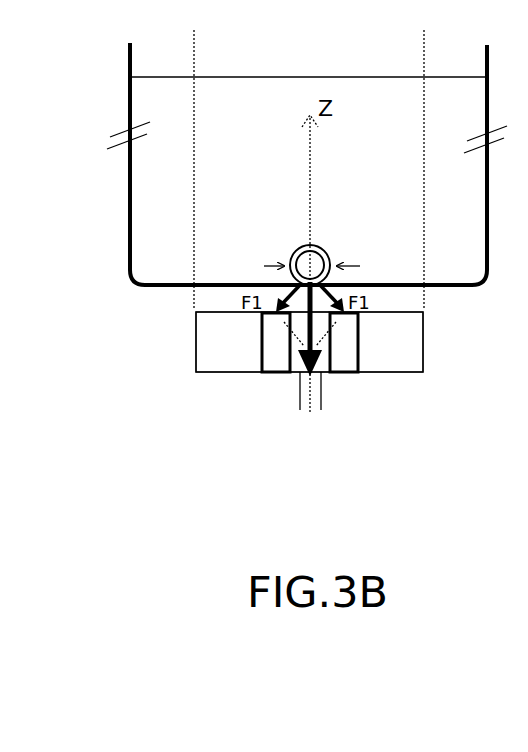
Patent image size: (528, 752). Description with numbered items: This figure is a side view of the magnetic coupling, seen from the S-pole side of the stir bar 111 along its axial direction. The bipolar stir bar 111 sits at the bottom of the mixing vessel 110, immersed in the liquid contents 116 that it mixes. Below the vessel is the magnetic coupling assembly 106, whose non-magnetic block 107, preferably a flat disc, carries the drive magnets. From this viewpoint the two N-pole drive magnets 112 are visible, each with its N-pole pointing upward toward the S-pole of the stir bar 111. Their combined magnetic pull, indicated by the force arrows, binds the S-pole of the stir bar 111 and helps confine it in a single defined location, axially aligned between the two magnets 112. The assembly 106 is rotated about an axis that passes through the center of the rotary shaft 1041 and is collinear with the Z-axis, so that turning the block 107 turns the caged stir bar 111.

The mixing vessel 110 is at (128, 57).
The liquid contents 116 is at (152, 178).
The bipolar stir bar 111 is at (318, 246).
The magnetic coupling assembly 106 is at (425, 340).
The non-magnetic block 107 is at (213, 360).
The N-pole drive magnets 112 is at (310, 342).
The rotary shaft 1041 is at (323, 396).